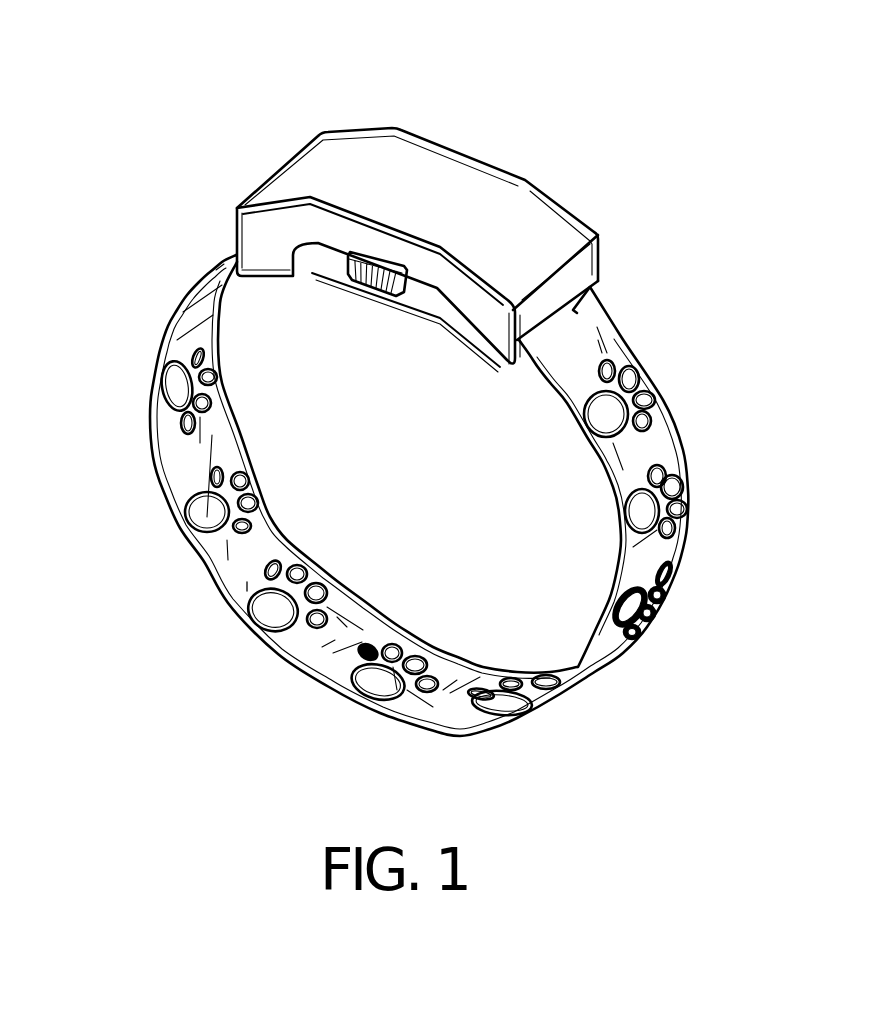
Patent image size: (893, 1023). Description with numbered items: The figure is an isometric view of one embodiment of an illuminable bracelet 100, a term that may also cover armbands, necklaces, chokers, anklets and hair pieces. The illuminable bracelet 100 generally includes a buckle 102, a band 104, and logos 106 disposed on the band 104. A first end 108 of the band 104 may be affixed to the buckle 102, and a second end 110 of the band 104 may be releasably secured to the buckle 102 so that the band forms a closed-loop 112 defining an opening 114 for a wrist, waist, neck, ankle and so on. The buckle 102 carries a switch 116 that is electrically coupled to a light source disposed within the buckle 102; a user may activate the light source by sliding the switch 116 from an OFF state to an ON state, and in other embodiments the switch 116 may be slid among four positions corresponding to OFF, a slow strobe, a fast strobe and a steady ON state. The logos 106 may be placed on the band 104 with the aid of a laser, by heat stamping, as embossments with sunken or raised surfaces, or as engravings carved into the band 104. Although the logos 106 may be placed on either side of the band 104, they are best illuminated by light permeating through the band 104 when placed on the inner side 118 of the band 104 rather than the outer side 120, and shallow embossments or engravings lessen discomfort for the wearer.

The illuminable bracelet 100 is at (106, 65).
The buckle 102 is at (417, 126).
The band 104 is at (693, 423).
The logos 106 is at (247, 582).
The first end 108 is at (598, 281).
The second end 110 is at (213, 258).
The closed-loop 112 is at (599, 688).
The opening 114 is at (432, 474).
The switch 116 is at (403, 292).
The inner side 118 is at (322, 647).
The outer side 120 is at (638, 566).